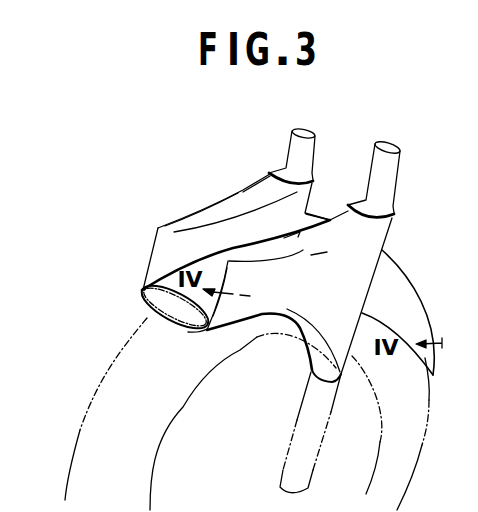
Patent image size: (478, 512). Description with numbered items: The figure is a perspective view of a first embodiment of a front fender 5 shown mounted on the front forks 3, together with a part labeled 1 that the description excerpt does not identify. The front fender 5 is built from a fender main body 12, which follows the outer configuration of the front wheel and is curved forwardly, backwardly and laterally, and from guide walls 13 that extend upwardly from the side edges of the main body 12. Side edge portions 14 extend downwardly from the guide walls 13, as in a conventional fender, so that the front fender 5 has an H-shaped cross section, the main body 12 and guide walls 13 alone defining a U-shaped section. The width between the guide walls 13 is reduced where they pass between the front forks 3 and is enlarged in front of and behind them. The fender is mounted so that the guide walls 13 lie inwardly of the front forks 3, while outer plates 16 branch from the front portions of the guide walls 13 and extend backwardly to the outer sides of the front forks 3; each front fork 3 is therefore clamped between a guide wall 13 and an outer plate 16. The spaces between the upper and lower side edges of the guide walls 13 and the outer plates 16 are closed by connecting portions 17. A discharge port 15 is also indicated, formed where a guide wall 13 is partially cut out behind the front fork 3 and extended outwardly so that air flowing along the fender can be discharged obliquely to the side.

The tubular member 1 is at (80, 428).
The front forks 3 is at (312, 154).
The front fender 5 is at (151, 211).
The fender main body 12 is at (142, 308).
The guide walls 13 is at (160, 265).
The side edge portions 14 is at (201, 334).
The discharge port 15 is at (220, 290).
The outer plates 16 is at (203, 218).
The connecting portions 17 is at (246, 206).